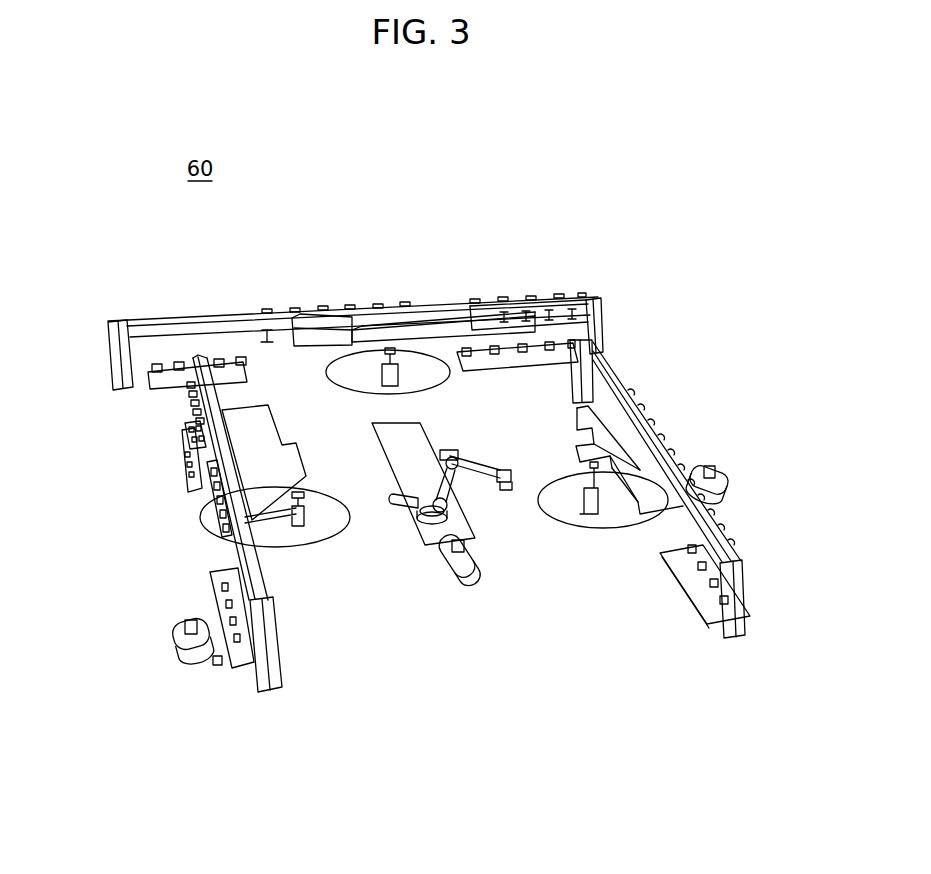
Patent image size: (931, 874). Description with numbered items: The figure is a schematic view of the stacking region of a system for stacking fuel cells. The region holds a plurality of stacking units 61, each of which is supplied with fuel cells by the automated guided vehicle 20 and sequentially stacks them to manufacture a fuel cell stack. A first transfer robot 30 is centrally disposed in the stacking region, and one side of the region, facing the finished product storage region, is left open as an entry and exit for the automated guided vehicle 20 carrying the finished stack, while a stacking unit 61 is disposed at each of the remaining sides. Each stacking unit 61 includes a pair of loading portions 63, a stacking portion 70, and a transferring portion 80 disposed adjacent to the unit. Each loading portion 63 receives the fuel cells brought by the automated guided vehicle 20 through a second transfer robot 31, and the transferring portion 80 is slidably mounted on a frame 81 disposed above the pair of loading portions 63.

The automated guided vehicle 20 is at (185, 641).
The first transfer robot 30 is at (461, 443).
The second transfer robot 31 is at (218, 667).
The stacking unit 61 is at (405, 284).
The loading portion 63 is at (162, 380).
The stacking portion 70 is at (348, 388).
The transferring portion 80 is at (194, 308).
The frame 81 is at (312, 318).